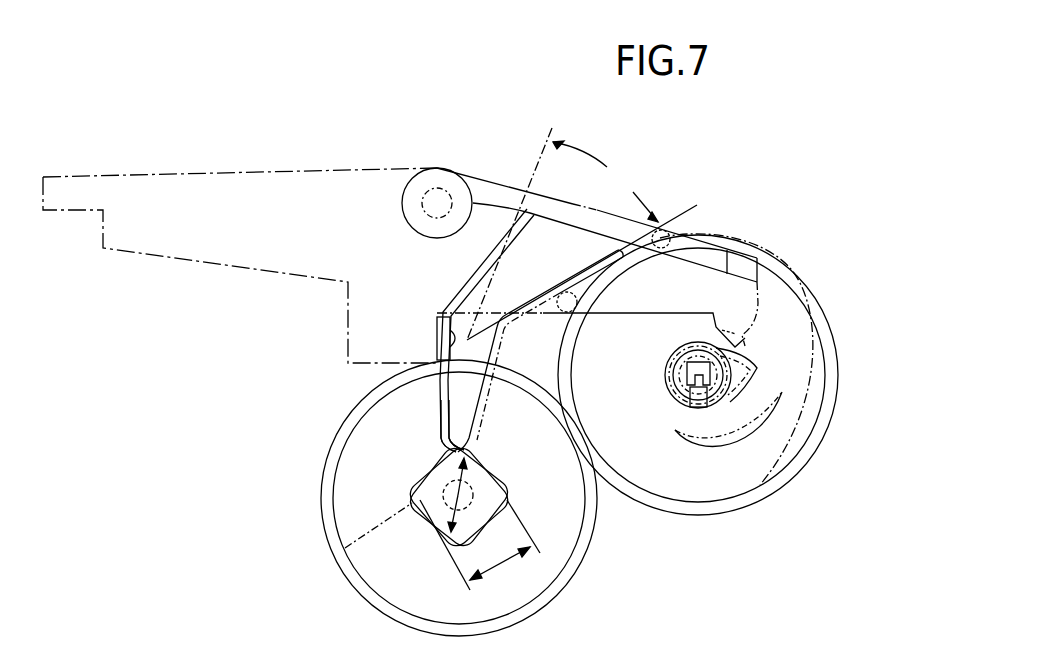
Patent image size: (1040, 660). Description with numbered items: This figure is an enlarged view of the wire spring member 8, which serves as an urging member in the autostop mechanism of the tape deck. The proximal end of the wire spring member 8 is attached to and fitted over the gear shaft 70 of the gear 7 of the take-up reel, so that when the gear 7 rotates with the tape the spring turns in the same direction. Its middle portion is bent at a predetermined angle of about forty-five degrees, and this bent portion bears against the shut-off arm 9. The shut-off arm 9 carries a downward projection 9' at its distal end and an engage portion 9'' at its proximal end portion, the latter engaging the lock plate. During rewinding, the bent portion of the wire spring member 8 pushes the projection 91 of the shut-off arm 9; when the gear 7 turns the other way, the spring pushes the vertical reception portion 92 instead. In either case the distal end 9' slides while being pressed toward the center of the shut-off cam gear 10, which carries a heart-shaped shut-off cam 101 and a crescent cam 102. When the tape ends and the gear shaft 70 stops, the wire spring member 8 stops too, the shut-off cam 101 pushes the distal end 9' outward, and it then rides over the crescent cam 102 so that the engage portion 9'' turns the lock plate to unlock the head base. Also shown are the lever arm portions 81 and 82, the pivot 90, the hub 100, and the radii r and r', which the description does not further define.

The gear of take-up reel 7 is at (596, 522).
The wire spring member 8 is at (515, 308).
The lever lower arm 81 is at (407, 500).
The lever arm end 82 is at (593, 273).
The shut-off arm 9 is at (599, 256).
The downward projection 9' is at (745, 348).
The engage portion 9'' is at (240, 225).
The projection 91 is at (578, 302).
The vertical reception portion 92 is at (438, 313).
The shut-off cam gear 10 is at (697, 516).
The roller hub 100 is at (722, 346).
The shut-off cam 101 is at (760, 363).
The crescent cam 102 is at (760, 437).
The gear shaft 70 is at (410, 512).
The pivot 90 is at (437, 196).
The cam radius r is at (495, 492).
The cam second radius r' is at (442, 546).